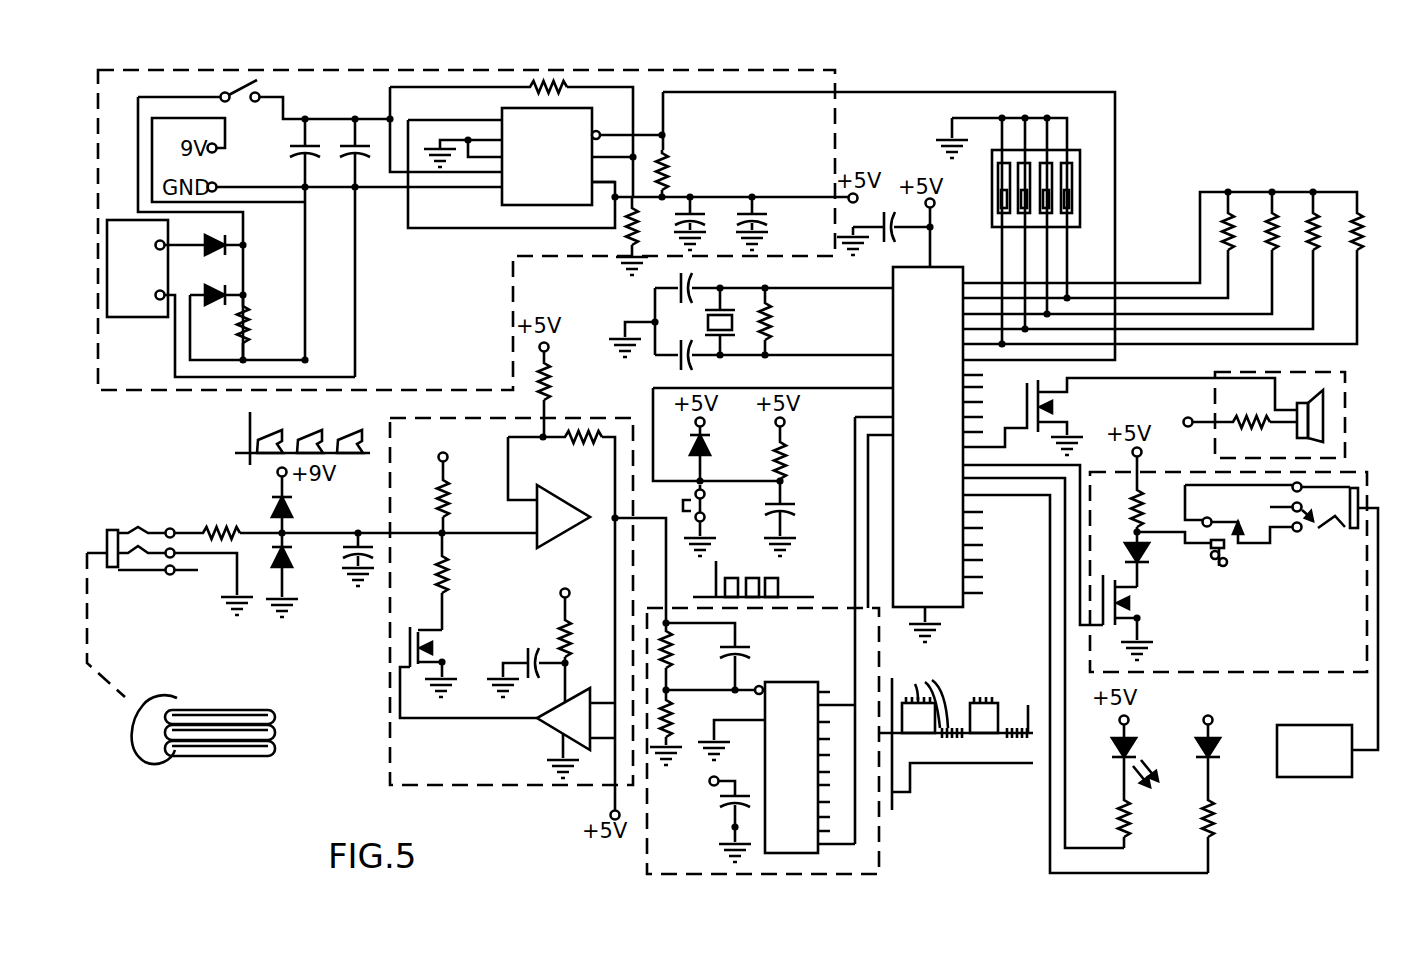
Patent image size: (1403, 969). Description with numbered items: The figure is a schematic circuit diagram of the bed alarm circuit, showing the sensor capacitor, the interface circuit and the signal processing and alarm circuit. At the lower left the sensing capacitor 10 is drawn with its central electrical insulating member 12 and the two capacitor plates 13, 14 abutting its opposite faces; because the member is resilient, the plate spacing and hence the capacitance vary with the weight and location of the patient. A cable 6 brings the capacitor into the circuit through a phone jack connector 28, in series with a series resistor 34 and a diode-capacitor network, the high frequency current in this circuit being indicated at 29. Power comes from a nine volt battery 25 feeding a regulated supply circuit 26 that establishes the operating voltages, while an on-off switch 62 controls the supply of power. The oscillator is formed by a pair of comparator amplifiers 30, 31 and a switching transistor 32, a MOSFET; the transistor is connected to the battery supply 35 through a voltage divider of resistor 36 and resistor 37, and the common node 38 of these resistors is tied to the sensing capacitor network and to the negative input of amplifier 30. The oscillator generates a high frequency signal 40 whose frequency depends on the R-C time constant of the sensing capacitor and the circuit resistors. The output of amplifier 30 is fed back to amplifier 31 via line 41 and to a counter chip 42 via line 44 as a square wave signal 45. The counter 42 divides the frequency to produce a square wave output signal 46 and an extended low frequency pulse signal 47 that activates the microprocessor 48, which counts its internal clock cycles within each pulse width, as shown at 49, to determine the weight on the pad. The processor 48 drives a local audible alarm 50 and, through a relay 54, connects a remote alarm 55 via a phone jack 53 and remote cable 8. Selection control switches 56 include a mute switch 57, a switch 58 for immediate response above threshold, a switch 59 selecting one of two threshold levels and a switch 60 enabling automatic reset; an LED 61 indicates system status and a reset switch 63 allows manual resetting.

The cable 6 is at (87, 655).
The remote cable 8 is at (1375, 680).
The capacitor 10 is at (228, 728).
The central electrical insulating member 12 is at (257, 738).
The capacitor plate 13 is at (267, 712).
The capacitor plate 14 is at (255, 757).
The nine volt battery 25 is at (136, 318).
The regulated supply circuit 26 is at (358, 110).
The phone jack connector 28 is at (150, 522).
The high frequency current 29 is at (328, 584).
The comparator amplifier 30 is at (550, 488).
The comparator amplifier 31 is at (542, 723).
The switching transistor 32 is at (450, 636).
The series resistor 34 is at (233, 523).
The battery supply 35 is at (446, 462).
The resistor 36 is at (435, 495).
The resistor 37 is at (447, 571).
The common node 38 is at (447, 531).
The high frequency signal 40 is at (257, 437).
The line 41 is at (615, 645).
The counter chip 42 is at (757, 879).
The line 44 is at (662, 566).
The square wave signal 45 is at (771, 580).
The square wave output signal 46 is at (982, 702).
The extended low frequency pulse signal 47 is at (980, 765).
The microprocessor 48 is at (957, 630).
The cycles counted 49 is at (922, 695).
The audible alarm 50 is at (1345, 442).
The phone jack 53 is at (1330, 532).
The relay 54 is at (1210, 572).
The remote alarm 55 is at (1277, 763).
The selection control switches 56 is at (985, 204).
The mute switch 57 is at (1003, 212).
The switch 58 is at (1030, 174).
The switch 59 is at (1050, 188).
The switch 60 is at (1078, 212).
The LED 61 is at (1190, 754).
The on-off switch 62 is at (276, 90).
The reset switch 63 is at (681, 532).